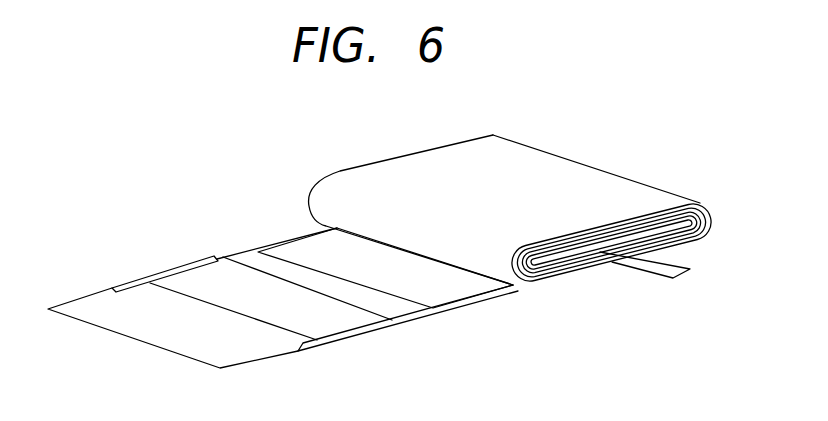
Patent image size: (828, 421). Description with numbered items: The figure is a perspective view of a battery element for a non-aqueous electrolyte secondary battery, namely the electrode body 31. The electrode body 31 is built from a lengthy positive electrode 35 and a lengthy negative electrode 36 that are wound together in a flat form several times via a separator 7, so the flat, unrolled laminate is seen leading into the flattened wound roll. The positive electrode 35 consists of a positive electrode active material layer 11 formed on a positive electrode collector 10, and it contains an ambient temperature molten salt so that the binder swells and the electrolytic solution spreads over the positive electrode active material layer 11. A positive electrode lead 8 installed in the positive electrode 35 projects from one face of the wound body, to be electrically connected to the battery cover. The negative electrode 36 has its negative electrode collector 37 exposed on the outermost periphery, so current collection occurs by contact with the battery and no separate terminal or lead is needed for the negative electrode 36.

The electrode body 31 is at (218, 102).
The positive electrode 35 is at (160, 178).
The positive electrode collector 10 is at (107, 306).
The positive electrode active material layer 11 is at (193, 281).
The negative electrode 36 is at (302, 252).
The negative electrode collector 37 is at (345, 342).
The separator 7 is at (413, 313).
The positive electrode lead 8 is at (641, 268).